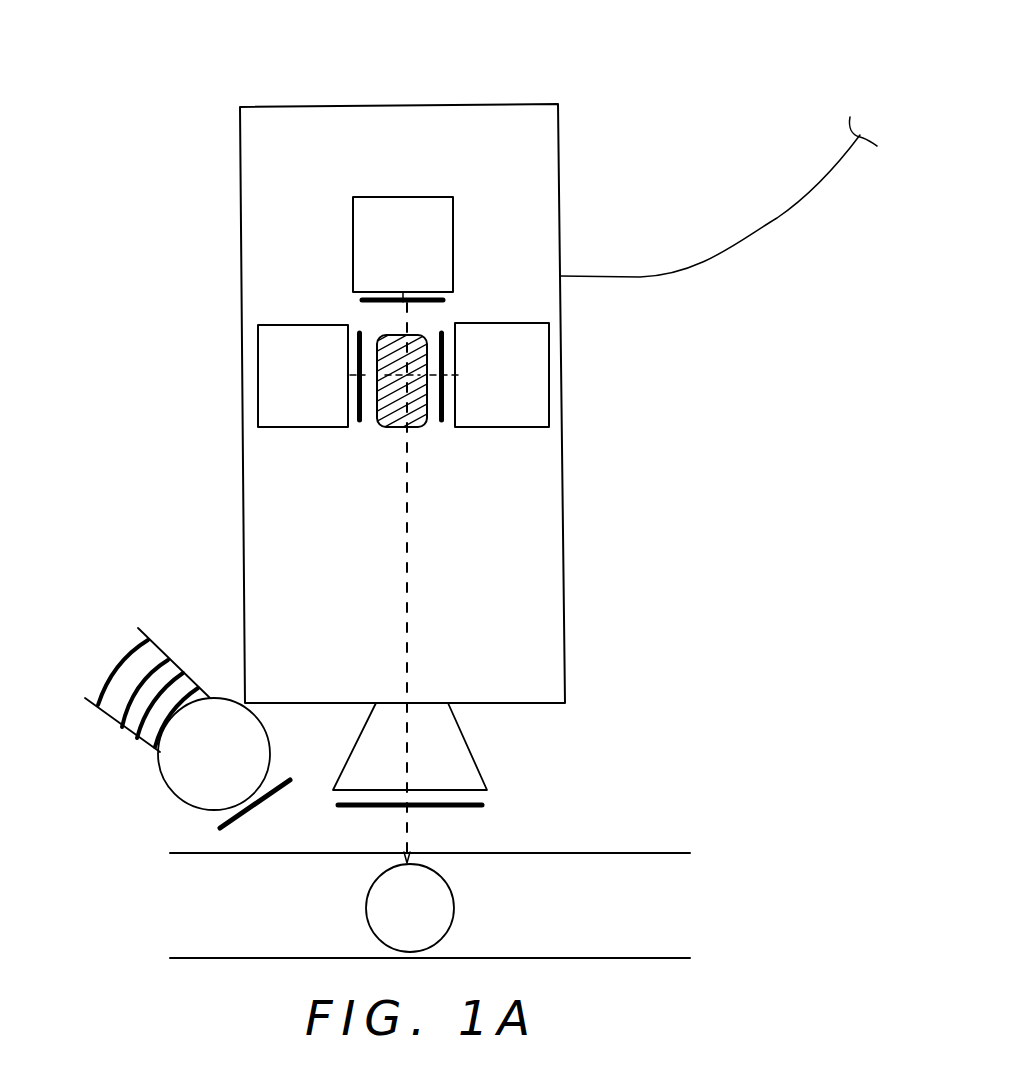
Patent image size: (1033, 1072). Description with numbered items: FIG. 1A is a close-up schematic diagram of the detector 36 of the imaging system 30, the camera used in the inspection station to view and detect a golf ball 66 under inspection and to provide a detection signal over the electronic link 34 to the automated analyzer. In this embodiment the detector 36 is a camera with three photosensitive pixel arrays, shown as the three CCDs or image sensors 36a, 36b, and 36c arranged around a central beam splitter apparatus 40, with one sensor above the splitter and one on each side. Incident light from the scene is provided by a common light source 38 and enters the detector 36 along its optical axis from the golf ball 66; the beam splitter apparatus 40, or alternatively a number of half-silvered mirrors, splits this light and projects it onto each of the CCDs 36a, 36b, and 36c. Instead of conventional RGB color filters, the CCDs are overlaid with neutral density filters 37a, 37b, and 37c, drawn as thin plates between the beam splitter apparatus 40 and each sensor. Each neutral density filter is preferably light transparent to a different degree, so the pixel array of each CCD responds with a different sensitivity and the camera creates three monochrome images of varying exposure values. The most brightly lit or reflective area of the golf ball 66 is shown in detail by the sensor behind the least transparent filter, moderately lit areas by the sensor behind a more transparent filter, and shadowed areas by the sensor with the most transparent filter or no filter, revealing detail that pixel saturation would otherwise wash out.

The imaging system 30 is at (604, 110).
The electronic link 34 is at (777, 218).
The detector 36 is at (238, 208).
The image sensor 36a is at (453, 218).
The image sensor 36b is at (548, 367).
The image sensor 36c is at (257, 367).
The neutral density filter 37a is at (443, 300).
The neutral density filter 37b is at (440, 332).
The neutral density filter 37c is at (362, 333).
The common light source 38 is at (222, 697).
The beam splitter apparatus 40 is at (427, 333).
The golf ball 66 is at (436, 921).